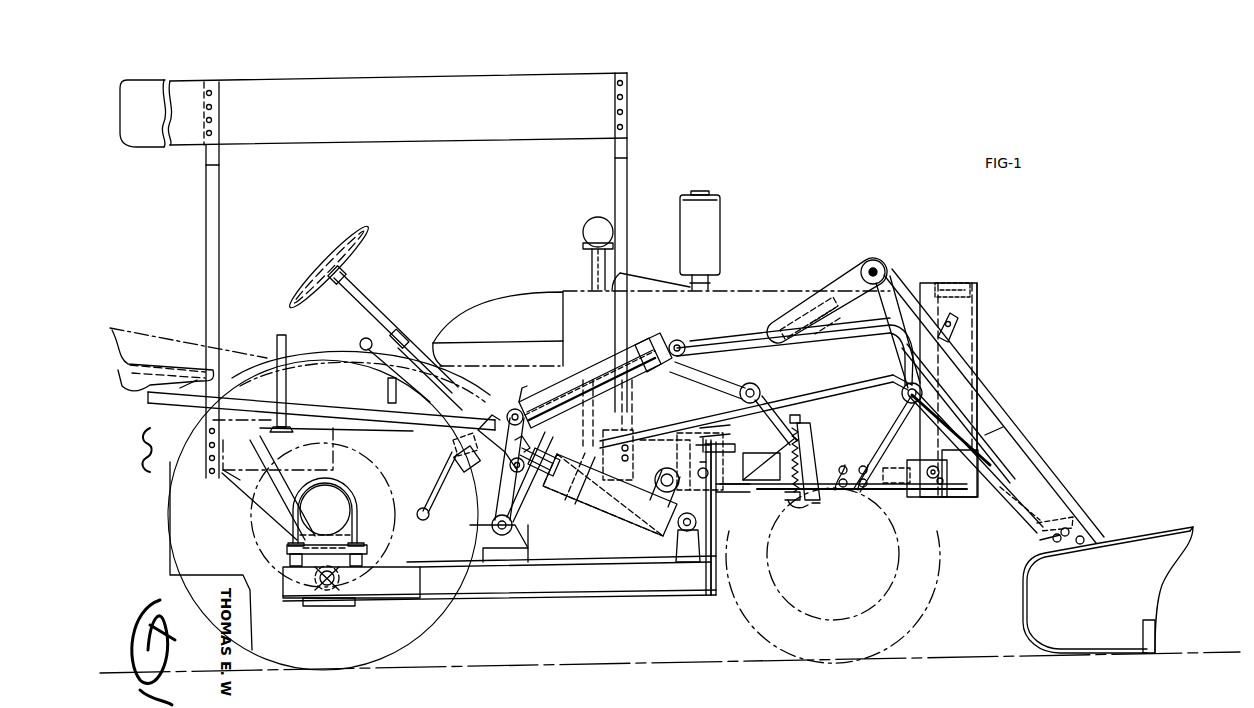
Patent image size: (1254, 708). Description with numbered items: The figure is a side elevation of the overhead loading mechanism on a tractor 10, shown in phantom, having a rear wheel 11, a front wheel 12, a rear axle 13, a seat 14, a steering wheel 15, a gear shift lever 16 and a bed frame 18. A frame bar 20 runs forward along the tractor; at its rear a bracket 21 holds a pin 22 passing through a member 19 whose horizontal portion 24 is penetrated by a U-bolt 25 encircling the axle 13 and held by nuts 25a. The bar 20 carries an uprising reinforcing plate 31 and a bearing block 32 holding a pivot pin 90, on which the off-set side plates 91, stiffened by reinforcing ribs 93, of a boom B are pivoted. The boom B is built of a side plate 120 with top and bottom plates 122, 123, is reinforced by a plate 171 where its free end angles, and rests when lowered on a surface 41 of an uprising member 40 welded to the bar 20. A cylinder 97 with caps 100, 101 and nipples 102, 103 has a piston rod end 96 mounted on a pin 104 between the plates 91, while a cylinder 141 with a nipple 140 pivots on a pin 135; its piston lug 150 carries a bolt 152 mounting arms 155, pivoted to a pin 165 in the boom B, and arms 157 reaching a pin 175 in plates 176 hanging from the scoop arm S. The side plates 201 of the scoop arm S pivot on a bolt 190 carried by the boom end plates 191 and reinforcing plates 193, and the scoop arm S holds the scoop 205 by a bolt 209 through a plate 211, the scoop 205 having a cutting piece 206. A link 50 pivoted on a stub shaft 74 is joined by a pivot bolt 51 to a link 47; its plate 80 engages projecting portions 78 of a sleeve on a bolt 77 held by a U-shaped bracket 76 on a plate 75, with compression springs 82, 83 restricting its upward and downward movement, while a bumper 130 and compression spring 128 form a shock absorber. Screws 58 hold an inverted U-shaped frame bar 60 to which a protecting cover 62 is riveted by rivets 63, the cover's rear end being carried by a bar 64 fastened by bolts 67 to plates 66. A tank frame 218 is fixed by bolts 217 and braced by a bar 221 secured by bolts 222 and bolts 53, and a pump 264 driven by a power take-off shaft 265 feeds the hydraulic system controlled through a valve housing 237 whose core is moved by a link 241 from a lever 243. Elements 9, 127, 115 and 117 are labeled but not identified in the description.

The protecting cover 62 is at (133, 85).
The rivets 63 is at (212, 133).
The inverted U-shaped bar 64 is at (220, 272).
The inverted U-shaped frame bar 60 is at (628, 254).
The tractor 10 is at (760, 290).
The steering wheel 15 is at (345, 245).
The seat 14 is at (150, 331).
The lever 243 is at (288, 387).
The gear shift lever 16 is at (361, 341).
The link 241 is at (344, 415).
The bolts 67 is at (209, 470).
The plates 66 is at (213, 475).
The rear wheel 11 is at (435, 633).
The rear axle 13 is at (345, 508).
The U-bolt 25 is at (358, 524).
The member 19 is at (315, 530).
The horizontally disposed portion 24 is at (368, 547).
The nuts 25a is at (288, 562).
The pin 22 is at (340, 585).
The bracket 21 is at (325, 608).
The frame bar 20 is at (613, 590).
The uprising reinforcing plate 31 is at (605, 562).
The bearing block 32 is at (520, 563).
The bed frame 18 is at (568, 538).
The pivot pin 90 is at (502, 535).
The side plates 91 is at (490, 492).
The reinforcing ribs 93 is at (493, 519).
The pin 135 is at (514, 410).
The pin 104 is at (516, 473).
The bumper 130 is at (456, 472).
The compression spring 128 is at (468, 465).
The bracket plate 127 is at (476, 446).
The section line 9 is at (432, 460).
The nipple 140 is at (530, 392).
The cylinder 141 is at (582, 372).
The bolt 152 is at (653, 352).
The lug 150 is at (679, 340).
The valve housing 237 is at (586, 427).
The arms 157 is at (722, 348).
The boom B is at (790, 395).
The arms 155 is at (732, 390).
The pin 165 is at (756, 404).
The reinforcing plates 193 is at (862, 266).
The reinforcing plate 171 is at (788, 336).
The plates 191 is at (872, 260).
The bolt 190 is at (890, 272).
The side plates of scoop arm 201 is at (910, 292).
The bolts 222 is at (975, 322).
The tank frame 218 is at (978, 362).
The scoop arm S is at (1007, 413).
The plates 176 is at (966, 400).
The pin 175 is at (904, 399).
The bar 221 is at (890, 426).
The bolt 77 is at (790, 422).
The plate 75 is at (817, 438).
The compression spring 82 is at (788, 434).
The plate 80 is at (771, 458).
The outwardly projecting portions 78 is at (797, 470).
The compression spring 83 is at (790, 493).
The U-shaped bracket 76 is at (820, 500).
The screws 53 is at (850, 490).
The power take-off shaft 265 is at (903, 488).
The pump 264 is at (932, 498).
The bolts 217 is at (958, 498).
The plate 211 is at (1036, 470).
The scoop 205 is at (1128, 535).
The bolt 209 is at (1046, 537).
The cutting piece 206 is at (1170, 652).
The front wheel 12 is at (942, 600).
The top plate 122 is at (680, 400).
The bottom plate 123 is at (676, 424).
The side plate 120 is at (665, 462).
The screws 58 is at (630, 450).
The stub shaft 74 is at (672, 470).
The pivot bolt 51 is at (718, 450).
The surface 41 is at (724, 430).
The link 47 is at (724, 447).
The uprising member 40 is at (714, 490).
The link 50 is at (742, 492).
The pivot 115 is at (688, 513).
The bracket 117 is at (693, 546).
The cap 100 is at (665, 538).
The nipple 102 is at (655, 495).
The nipple 103 is at (585, 478).
The cap 101 is at (562, 506).
The cylinder 97 is at (604, 507).
The piston rod end 96 is at (521, 492).